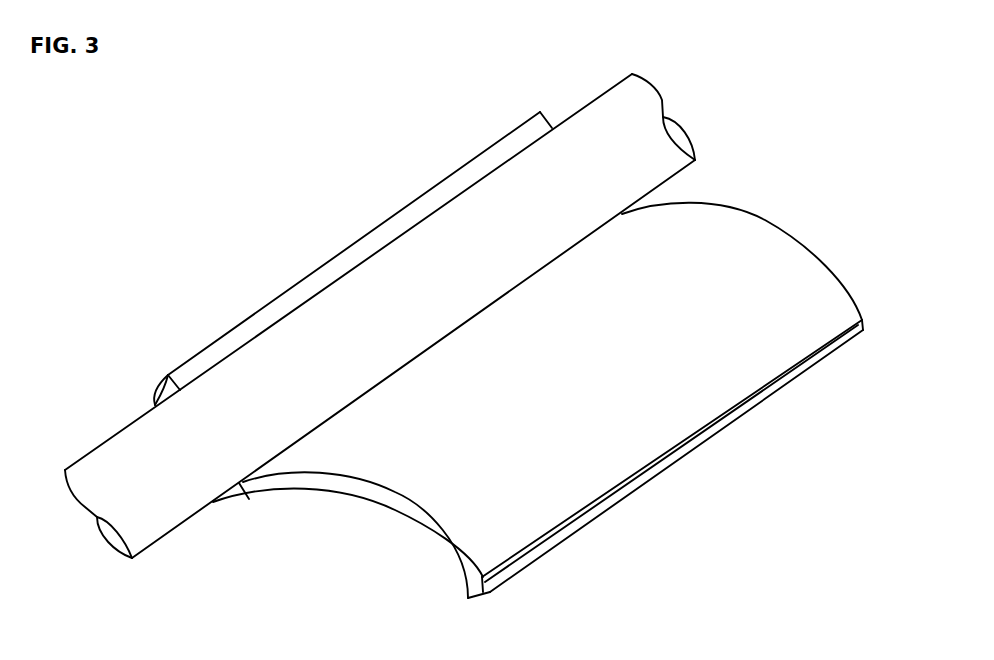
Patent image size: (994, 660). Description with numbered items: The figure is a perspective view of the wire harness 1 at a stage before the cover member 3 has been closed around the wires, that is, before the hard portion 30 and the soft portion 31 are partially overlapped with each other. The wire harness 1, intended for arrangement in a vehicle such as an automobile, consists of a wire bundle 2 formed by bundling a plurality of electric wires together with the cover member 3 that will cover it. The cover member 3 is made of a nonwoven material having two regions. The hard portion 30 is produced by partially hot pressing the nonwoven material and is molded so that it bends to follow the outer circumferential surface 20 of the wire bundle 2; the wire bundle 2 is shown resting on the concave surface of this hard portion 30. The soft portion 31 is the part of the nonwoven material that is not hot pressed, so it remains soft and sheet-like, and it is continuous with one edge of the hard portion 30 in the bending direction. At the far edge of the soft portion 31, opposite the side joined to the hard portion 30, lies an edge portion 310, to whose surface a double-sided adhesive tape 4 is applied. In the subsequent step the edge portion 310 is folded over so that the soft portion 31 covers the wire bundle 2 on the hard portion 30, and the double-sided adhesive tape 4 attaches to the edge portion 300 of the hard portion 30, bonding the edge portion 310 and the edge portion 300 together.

The wire harness 1 is at (308, 181).
The wire bundle 2 is at (163, 475).
The outer circumferential surface 20 is at (148, 520).
The edge portion 300 is at (163, 393).
The cover member 3 is at (336, 500).
The hard portion 30 is at (240, 498).
The soft portion 31 is at (689, 358).
The edge portion 310 is at (473, 592).
The double-sided adhesive tape 4 is at (635, 483).